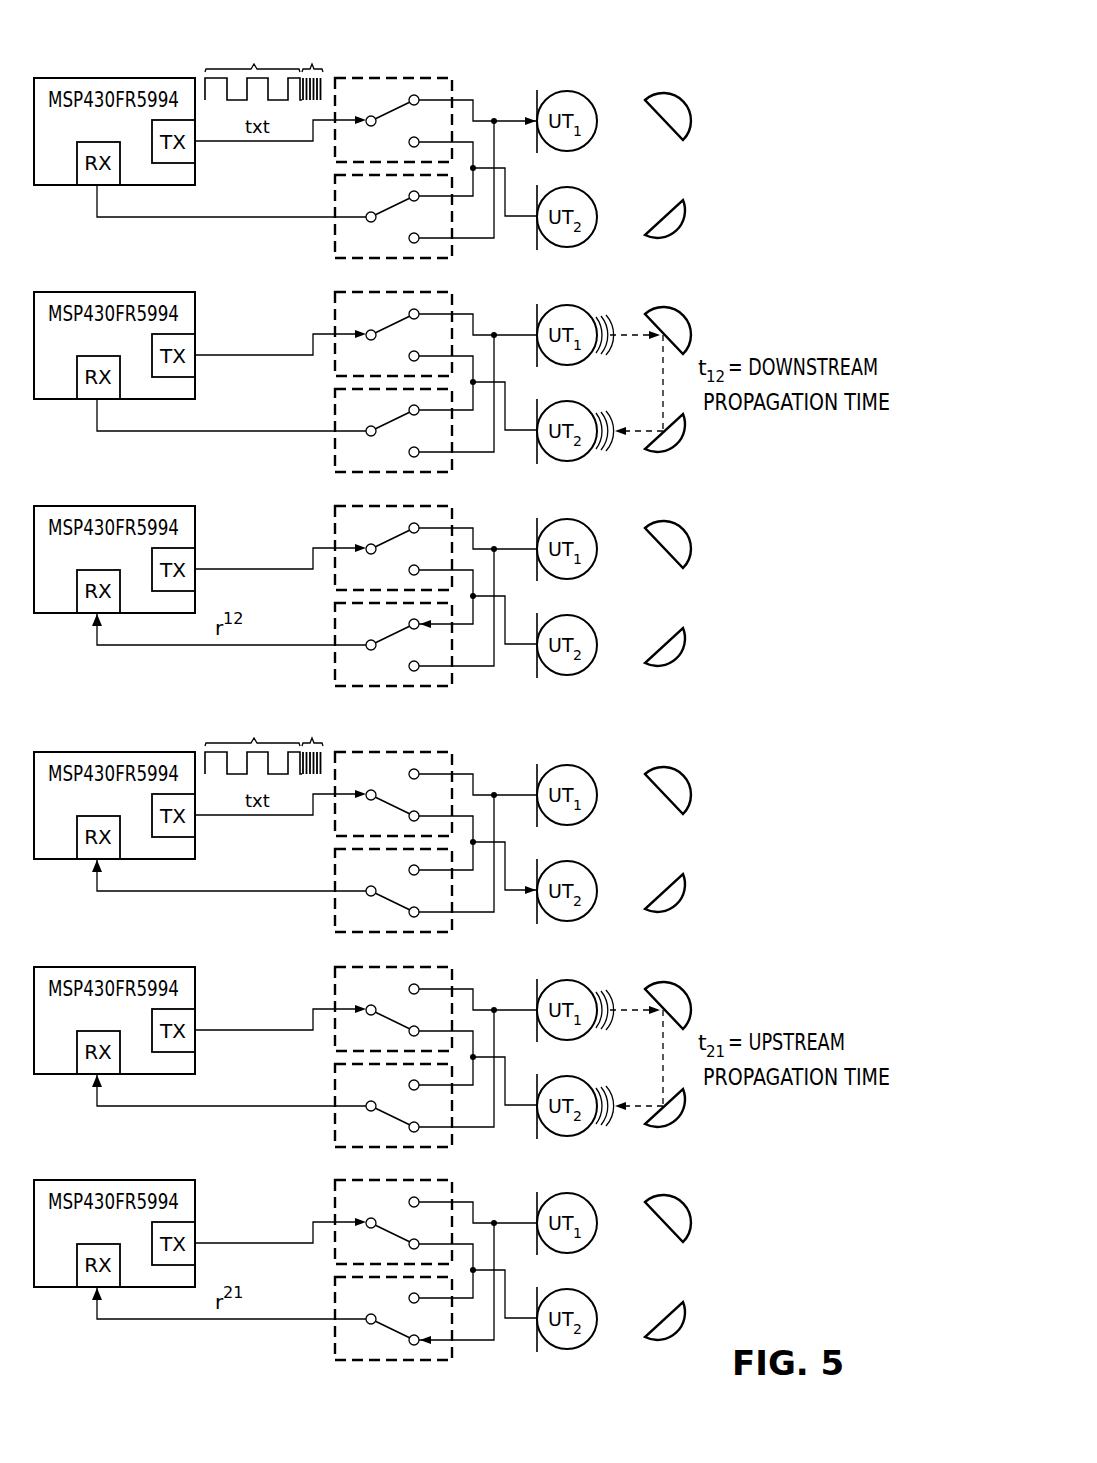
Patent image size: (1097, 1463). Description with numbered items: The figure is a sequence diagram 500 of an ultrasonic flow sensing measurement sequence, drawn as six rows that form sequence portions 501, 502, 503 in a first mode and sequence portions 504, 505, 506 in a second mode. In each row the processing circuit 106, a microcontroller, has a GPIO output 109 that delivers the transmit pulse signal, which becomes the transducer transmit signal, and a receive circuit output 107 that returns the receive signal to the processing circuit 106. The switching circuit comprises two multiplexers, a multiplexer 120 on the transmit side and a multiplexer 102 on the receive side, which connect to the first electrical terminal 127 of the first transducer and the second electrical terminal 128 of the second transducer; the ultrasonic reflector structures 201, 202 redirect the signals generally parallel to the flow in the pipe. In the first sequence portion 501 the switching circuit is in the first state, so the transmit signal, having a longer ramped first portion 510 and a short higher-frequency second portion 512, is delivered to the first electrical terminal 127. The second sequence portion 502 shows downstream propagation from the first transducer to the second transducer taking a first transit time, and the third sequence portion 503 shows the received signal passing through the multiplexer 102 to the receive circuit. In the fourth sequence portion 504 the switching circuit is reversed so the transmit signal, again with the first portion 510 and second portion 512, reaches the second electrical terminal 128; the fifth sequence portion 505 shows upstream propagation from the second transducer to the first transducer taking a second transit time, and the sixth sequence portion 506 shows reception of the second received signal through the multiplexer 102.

The sequence diagram 500 is at (640, 52).
The first sequence portion 501 is at (771, 128).
The second sequence portion 502 is at (773, 333).
The third sequence portion 503 is at (771, 557).
The fourth sequence portion 504 is at (771, 802).
The fifth sequence portion 505 is at (773, 1006).
The sixth sequence portion 506 is at (771, 1231).
The processing circuit 106 is at (76, 72).
The receive circuit output 107 is at (172, 219).
The GPIO output 109 is at (237, 143).
The multiplexer 120 is at (335, 160).
The multiplexer 102 is at (335, 228).
The first electrical terminal 127 is at (500, 118).
The second electrical terminal 128 is at (520, 218).
The ultrasonic reflector structure 201 is at (680, 102).
The ultrasonic reflector structure 202 is at (662, 215).
The first portion 510 is at (253, 399).
The second portion 512 is at (313, 399).